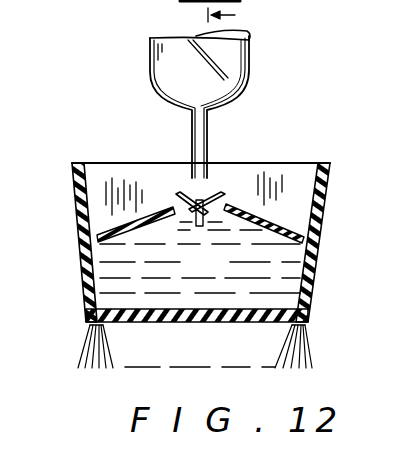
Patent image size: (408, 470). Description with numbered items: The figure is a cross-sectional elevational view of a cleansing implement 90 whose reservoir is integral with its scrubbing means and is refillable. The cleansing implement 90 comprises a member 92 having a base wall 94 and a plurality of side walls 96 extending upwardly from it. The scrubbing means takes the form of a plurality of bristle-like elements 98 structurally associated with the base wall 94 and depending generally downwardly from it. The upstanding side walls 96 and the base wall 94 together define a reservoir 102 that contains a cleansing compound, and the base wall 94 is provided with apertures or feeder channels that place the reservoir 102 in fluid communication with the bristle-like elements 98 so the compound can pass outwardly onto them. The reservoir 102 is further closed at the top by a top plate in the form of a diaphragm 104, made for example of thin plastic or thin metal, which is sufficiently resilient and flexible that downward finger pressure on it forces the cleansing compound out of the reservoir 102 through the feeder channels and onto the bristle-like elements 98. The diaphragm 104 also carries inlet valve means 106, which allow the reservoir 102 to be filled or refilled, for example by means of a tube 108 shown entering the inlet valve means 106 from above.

The cleansing implement 90 is at (210, 266).
The member 92 is at (88, 313).
The base wall 94 is at (230, 322).
The side walls 96 is at (322, 218).
The bristle-like elements 98 is at (97, 370).
The reservoir 102 is at (221, 281).
The diaphragm 104 is at (290, 222).
The inlet valve means 106 is at (256, 160).
The tube 108 is at (233, 93).